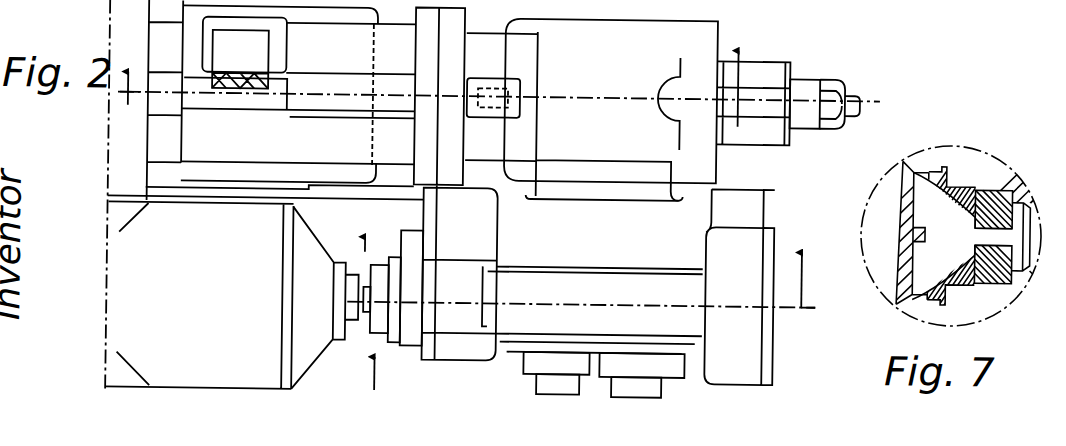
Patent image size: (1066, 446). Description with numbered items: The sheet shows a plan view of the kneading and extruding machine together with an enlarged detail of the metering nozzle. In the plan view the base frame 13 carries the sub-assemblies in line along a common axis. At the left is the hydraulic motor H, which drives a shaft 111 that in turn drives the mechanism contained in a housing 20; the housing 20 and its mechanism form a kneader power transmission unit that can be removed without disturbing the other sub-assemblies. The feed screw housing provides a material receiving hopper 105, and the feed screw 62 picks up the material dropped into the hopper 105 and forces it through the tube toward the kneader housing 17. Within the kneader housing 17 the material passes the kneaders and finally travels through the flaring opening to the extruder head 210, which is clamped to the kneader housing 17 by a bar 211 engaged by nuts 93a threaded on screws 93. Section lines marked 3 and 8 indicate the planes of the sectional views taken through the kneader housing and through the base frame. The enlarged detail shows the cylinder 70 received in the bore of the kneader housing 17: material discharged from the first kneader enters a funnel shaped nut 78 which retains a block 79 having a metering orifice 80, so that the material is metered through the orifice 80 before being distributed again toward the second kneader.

In FIG. 2, the section line 3- 3 is at (440, 75).
In FIG. 2, the material receiving hopper 105 is at (262, 48).
In FIG. 2, the feed screw 62 is at (253, 88).
In FIG. 2, the kneader housing 17 is at (718, 35).
In FIG. 2, the extruder head 210 is at (812, 42).
In FIG. 2, the bar 211 is at (809, 71).
In FIG. 2, the nuts 93a is at (835, 72).
In FIG. 2, the screws 93 is at (858, 92).
In FIG. 2, the housing 20 is at (753, 170).
In FIG. 2, the hydraulic motor H is at (272, 227).
In FIG. 2, the base frame 13 is at (581, 256).
In FIG. 2, the shaft 111 is at (368, 309).
In FIG. 2, the section line 8- 8 is at (386, 379).
In FIG. 7, the funnel shaped nut 78 is at (957, 190).
In FIG. 7, the block 79 is at (992, 200).
In FIG. 7, the metering orifice 80 is at (982, 237).
In FIG. 7, the cylinder 70 is at (1005, 287).